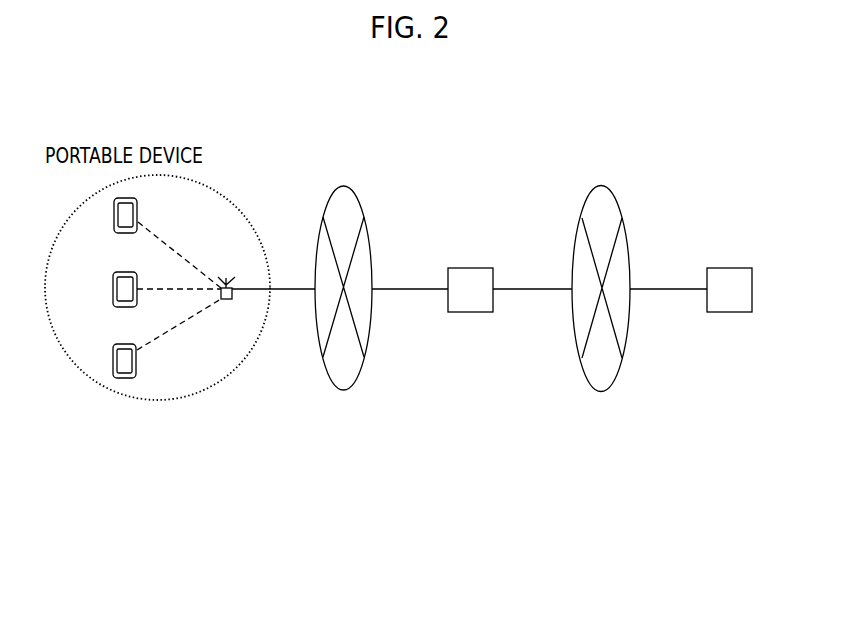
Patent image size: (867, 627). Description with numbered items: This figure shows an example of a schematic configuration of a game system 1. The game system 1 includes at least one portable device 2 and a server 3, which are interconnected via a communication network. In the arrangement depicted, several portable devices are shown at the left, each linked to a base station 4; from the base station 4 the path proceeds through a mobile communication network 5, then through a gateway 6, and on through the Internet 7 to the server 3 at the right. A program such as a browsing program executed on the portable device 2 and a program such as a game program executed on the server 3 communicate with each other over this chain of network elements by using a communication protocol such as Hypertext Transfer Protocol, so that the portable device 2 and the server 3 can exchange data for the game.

The game system 1 is at (607, 537).
The portable device 2 is at (114, 230).
The server 3 is at (743, 312).
The base station 4 is at (228, 299).
The mobile communication network 5 is at (363, 357).
The gateway 6 is at (485, 312).
The Internet 7 is at (622, 358).